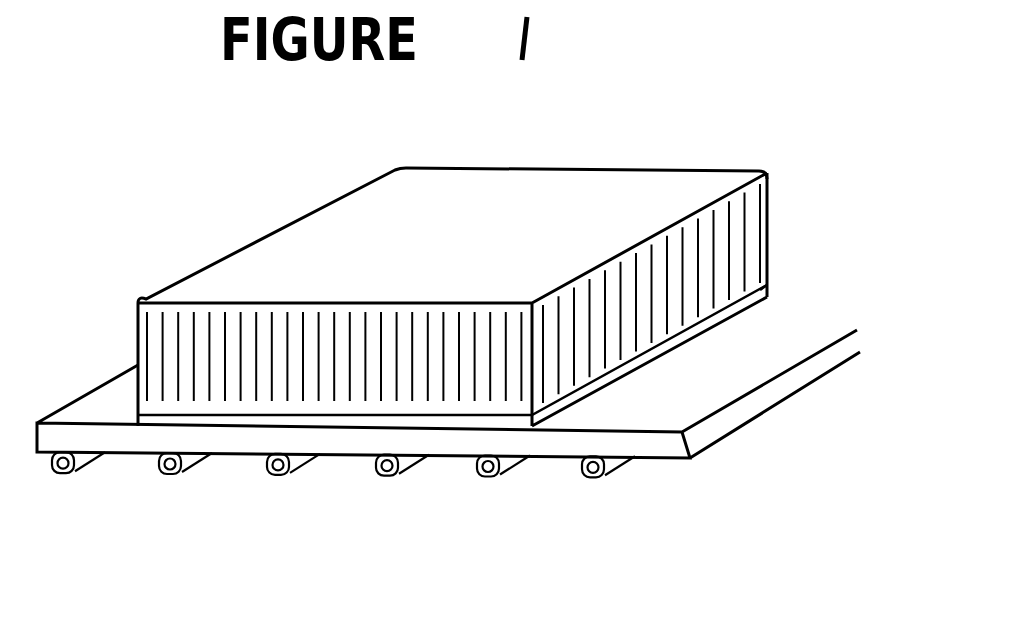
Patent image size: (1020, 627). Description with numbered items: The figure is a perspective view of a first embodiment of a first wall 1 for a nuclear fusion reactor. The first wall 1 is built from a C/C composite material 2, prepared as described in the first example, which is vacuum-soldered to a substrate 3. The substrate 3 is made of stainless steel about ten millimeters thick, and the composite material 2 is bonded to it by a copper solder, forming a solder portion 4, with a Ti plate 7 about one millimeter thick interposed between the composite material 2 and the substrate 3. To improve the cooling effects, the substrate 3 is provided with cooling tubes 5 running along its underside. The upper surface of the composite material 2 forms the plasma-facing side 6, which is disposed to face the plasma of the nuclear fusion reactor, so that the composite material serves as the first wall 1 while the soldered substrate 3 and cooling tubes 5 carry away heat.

The first wall 1 is at (253, 240).
The C/C composite material 2 is at (740, 228).
The substrate 3 is at (652, 445).
The solder portion 4 is at (735, 305).
The cooling tubes 5 is at (490, 480).
The plasma-facing side 6 is at (550, 215).
The Ti plate 7 is at (760, 285).